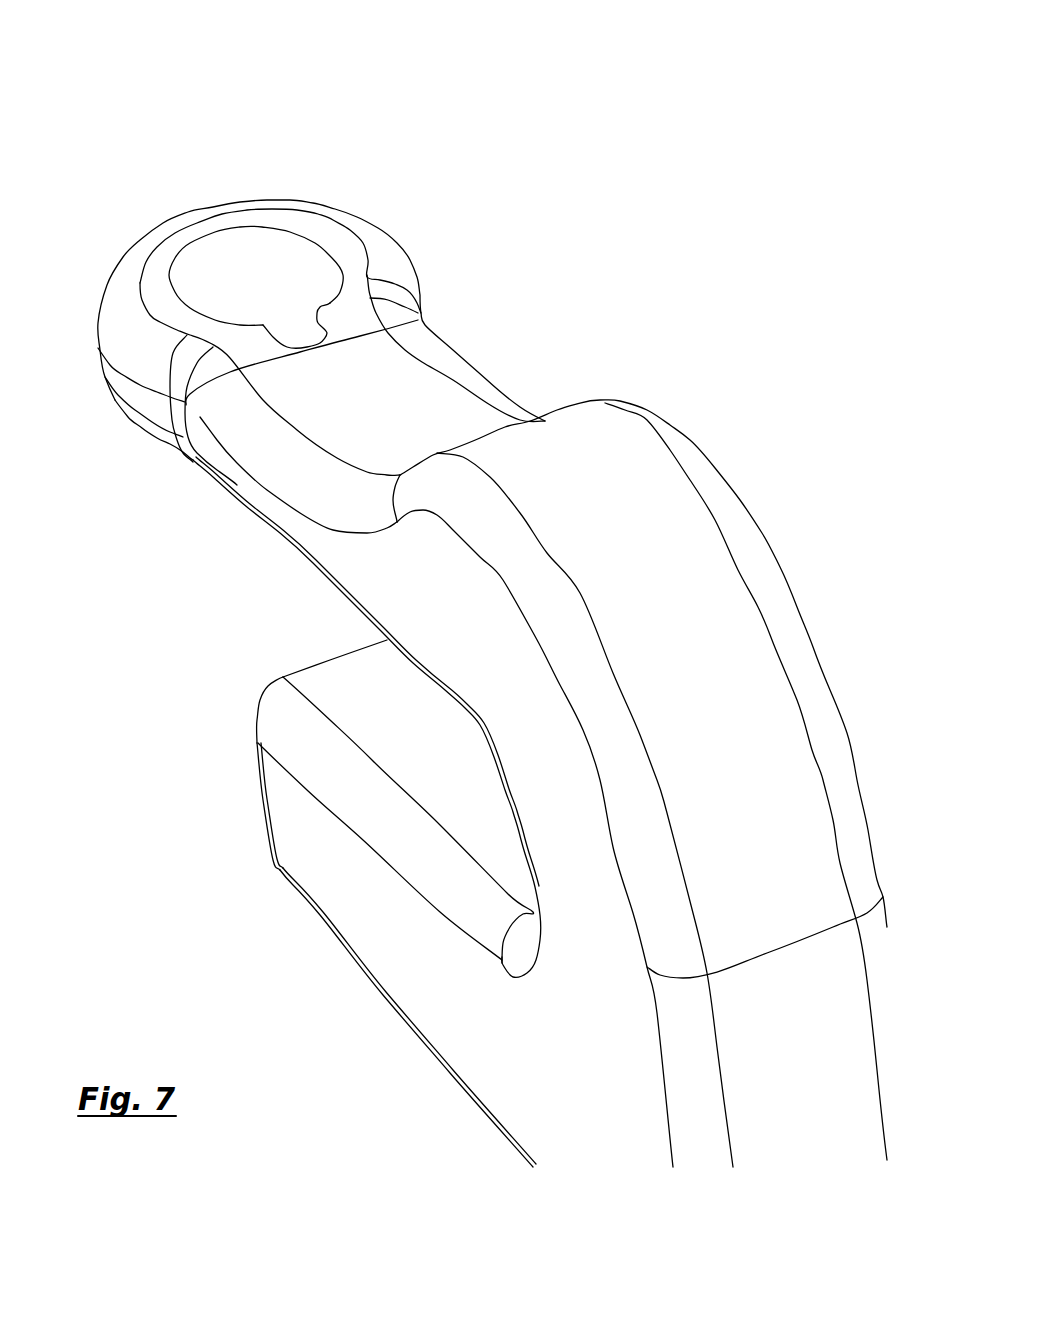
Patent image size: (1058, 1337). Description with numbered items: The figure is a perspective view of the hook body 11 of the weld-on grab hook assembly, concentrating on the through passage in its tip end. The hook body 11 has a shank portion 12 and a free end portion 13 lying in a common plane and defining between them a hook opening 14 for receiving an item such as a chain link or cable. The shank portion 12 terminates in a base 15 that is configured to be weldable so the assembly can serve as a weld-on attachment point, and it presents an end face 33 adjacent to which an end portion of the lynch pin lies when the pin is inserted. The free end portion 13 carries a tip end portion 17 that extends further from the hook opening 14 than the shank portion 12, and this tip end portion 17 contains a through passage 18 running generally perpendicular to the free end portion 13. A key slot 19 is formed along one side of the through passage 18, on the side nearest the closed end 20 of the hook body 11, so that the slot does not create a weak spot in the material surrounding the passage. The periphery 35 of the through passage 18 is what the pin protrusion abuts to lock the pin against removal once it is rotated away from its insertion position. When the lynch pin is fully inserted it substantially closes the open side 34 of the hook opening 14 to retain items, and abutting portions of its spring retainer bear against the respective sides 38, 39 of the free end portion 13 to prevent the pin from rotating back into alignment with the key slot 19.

The hook body 11 is at (593, 212).
The shank portion 12 is at (313, 858).
The free end portion 13 is at (602, 427).
The hook opening 14 is at (430, 767).
The base 15 is at (448, 1017).
The tip end portion 17 is at (365, 220).
The through passage 18 is at (258, 252).
The key slot 19 is at (303, 333).
The closed end 20 is at (540, 833).
The end face 33 is at (262, 793).
The open side 34 is at (307, 628).
The periphery 35 is at (160, 253).
The side of the free end portion 38 is at (267, 498).
The side of the free end portion 39 is at (488, 383).